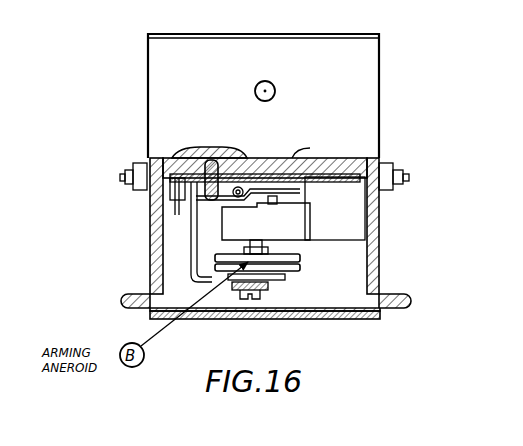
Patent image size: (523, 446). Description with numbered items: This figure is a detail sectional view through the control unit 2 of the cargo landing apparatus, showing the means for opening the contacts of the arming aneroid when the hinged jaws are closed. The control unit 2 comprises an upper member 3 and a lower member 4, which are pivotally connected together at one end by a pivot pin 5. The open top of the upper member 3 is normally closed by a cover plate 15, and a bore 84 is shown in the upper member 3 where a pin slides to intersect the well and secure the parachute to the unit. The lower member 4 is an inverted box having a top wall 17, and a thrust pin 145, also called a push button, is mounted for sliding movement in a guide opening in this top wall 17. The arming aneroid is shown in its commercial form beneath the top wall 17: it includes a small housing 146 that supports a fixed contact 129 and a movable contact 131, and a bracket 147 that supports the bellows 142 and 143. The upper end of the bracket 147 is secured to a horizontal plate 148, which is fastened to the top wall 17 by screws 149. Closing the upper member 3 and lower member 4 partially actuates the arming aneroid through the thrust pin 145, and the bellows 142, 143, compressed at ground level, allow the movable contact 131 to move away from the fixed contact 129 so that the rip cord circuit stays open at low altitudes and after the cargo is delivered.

The control unit 2 is at (383, 32).
The upper member 3 is at (367, 63).
The lower member 4 is at (380, 278).
The pivot pin 5 is at (409, 178).
The cover plate 15 is at (350, 20).
The top wall 17 is at (362, 157).
The bore 84 is at (275, 86).
The fixed contact 129 is at (380, 222).
The movable contact 131 is at (190, 232).
The bellows 142 is at (300, 256).
The bellows 143 is at (298, 270).
The thrust pin 145 is at (262, 157).
The housing 146 is at (310, 238).
The bracket 147 is at (190, 262).
The horizontal plate 148 is at (310, 186).
The screws 149 is at (178, 158).